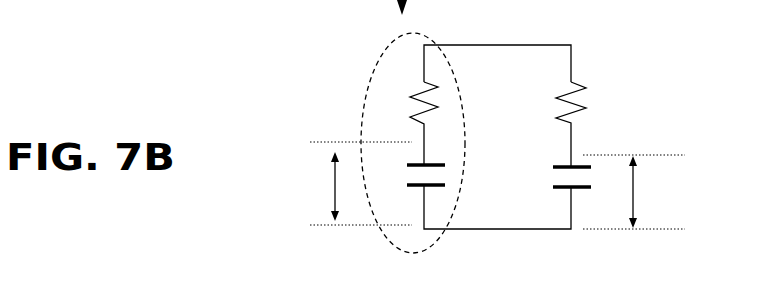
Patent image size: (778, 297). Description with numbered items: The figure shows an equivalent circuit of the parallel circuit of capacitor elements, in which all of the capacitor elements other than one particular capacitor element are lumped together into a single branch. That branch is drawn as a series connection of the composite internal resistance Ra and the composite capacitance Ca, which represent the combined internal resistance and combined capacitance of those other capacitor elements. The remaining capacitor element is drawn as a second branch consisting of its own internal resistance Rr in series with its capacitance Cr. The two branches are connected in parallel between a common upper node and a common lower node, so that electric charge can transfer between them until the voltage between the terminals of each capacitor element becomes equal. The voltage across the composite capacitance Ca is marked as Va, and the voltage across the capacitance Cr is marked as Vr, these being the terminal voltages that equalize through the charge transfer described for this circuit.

The composite internal resistance Ra is at (408, 123).
The composite capacitance Ca is at (411, 184).
The internal resistance of capacitor element Cr Rr is at (585, 124).
The capacitance of capacitor element Cr is at (584, 193).
The voltage across actuator capacitance Va is at (361, 183).
The voltage across reference capacitance Vr is at (634, 192).